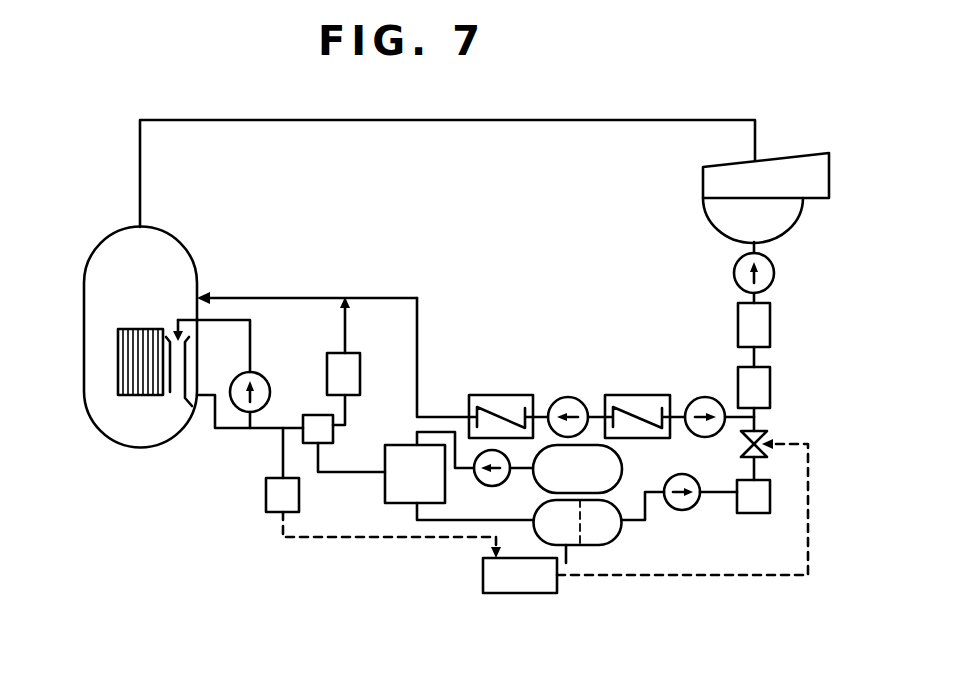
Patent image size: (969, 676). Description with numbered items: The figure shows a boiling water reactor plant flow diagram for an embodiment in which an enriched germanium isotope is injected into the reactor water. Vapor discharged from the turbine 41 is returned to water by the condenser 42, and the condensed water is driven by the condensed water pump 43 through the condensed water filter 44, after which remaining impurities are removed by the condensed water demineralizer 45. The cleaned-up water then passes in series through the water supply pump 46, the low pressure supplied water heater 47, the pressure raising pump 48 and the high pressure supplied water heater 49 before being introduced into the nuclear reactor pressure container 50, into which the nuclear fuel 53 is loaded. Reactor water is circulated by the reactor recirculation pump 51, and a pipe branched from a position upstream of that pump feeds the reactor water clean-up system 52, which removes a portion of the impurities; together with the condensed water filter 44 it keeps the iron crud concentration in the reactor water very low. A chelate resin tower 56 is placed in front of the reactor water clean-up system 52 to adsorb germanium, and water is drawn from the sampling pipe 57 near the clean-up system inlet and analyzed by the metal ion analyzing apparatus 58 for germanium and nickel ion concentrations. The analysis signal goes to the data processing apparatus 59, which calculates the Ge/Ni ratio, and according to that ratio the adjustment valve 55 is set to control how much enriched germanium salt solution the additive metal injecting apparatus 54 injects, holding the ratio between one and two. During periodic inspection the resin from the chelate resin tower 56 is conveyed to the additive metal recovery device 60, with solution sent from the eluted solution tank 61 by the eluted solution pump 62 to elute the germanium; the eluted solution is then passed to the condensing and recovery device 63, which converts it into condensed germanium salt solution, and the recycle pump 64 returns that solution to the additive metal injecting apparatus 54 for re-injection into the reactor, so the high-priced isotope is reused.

The turbine 41 is at (703, 178).
The condenser 42 is at (708, 222).
The condensed water pump 43 is at (738, 270).
The condensed water filter 44 is at (770, 325).
The condensed water demineralizer 45 is at (770, 390).
The water supply pump 46 is at (708, 397).
The low pressure supplied water heater 47 is at (630, 395).
The pressure raising pump 48 is at (562, 397).
The high pressure supplied water heater 49 is at (486, 395).
The nuclear reactor pressure container 50 is at (176, 237).
The reactor recirculation pump 51 is at (262, 378).
The reactor water clean-up system 52 is at (350, 353).
The nuclear fuel 53 is at (125, 355).
The additive metal injecting apparatus 54 is at (760, 513).
The adjustment valve 55 is at (765, 438).
The chelate resin tower 56 is at (336, 440).
The sampling pipe 57 is at (282, 455).
The metal ion analyzing apparatus 58 is at (266, 497).
The additive metal recovery device 60 is at (385, 480).
The data processing apparatus 59 is at (532, 593).
The eluted solution tank 61 is at (622, 470).
The eluted solution pump 62 is at (488, 486).
The condensing and recovery device 63 is at (600, 545).
The recycle pump 64 is at (680, 510).